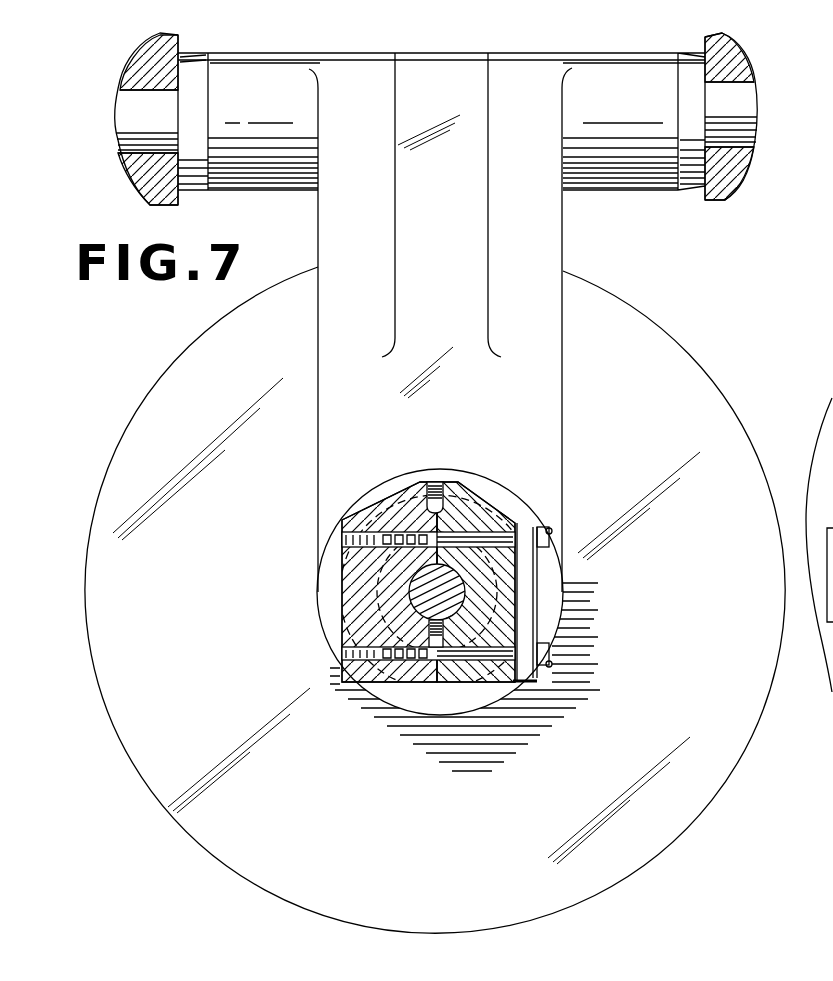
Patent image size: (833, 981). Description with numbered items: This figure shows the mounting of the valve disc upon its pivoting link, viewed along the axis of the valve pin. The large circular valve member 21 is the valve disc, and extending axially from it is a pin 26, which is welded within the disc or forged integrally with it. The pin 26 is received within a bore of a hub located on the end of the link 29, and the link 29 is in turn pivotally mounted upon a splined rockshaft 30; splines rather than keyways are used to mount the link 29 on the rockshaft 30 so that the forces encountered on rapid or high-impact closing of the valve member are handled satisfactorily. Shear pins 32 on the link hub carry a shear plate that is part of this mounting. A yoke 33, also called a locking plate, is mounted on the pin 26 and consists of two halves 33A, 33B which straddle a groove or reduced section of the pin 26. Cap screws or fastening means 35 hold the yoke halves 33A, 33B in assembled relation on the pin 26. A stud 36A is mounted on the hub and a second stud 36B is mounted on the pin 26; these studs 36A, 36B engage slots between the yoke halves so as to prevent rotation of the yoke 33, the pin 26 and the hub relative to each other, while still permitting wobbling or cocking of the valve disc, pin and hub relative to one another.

The valve member 21 is at (660, 322).
The pin 26 is at (449, 609).
The link 29 is at (448, 311).
The splined rockshaft 30 is at (752, 100).
The shear pins 32 is at (392, 522).
The yoke 33 is at (449, 568).
The yoke half 33A is at (488, 510).
The yoke half 33B is at (356, 520).
The cap screws 35 is at (548, 530).
The stud 36A is at (437, 482).
The stud 36B is at (437, 650).